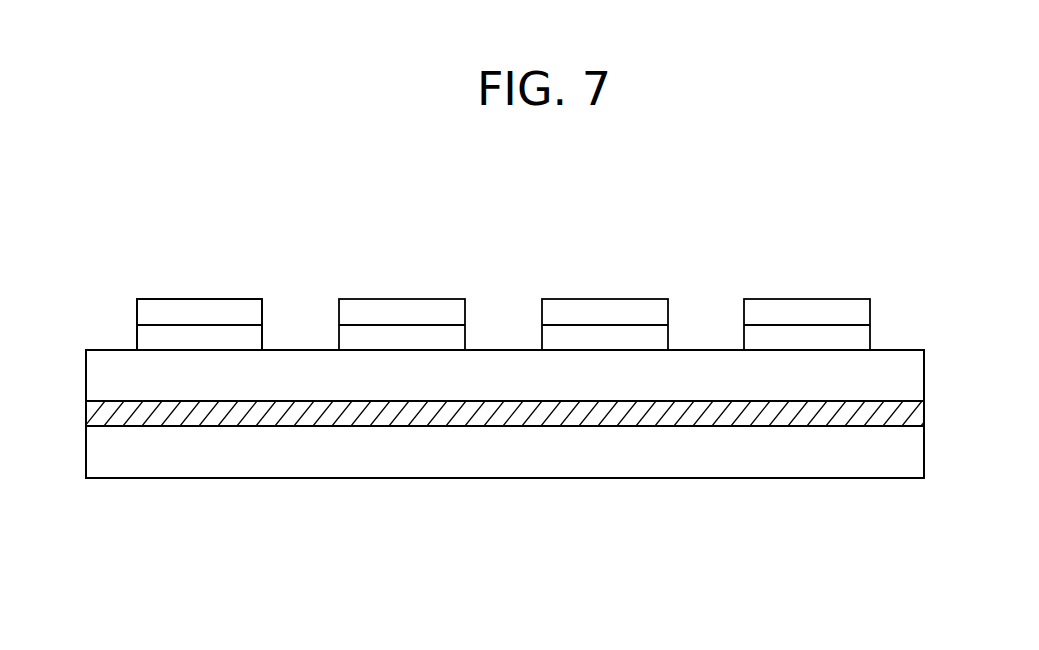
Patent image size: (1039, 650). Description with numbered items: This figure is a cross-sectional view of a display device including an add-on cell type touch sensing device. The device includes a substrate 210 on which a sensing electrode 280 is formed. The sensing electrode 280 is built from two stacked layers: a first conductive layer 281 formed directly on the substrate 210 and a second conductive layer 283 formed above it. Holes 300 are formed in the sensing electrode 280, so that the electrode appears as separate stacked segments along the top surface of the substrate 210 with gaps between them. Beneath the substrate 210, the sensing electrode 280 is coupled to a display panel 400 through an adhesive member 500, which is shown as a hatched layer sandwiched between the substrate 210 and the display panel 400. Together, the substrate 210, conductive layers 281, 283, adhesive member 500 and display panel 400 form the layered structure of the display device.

The sensing electrode 280 is at (253, 237).
The second conductive layer 283 is at (177, 312).
The first conductive layer 281 is at (235, 333).
The hole 300 is at (300, 317).
The substrate 210 is at (908, 374).
The adhesive member 500 is at (908, 417).
The display panel 400 is at (908, 457).